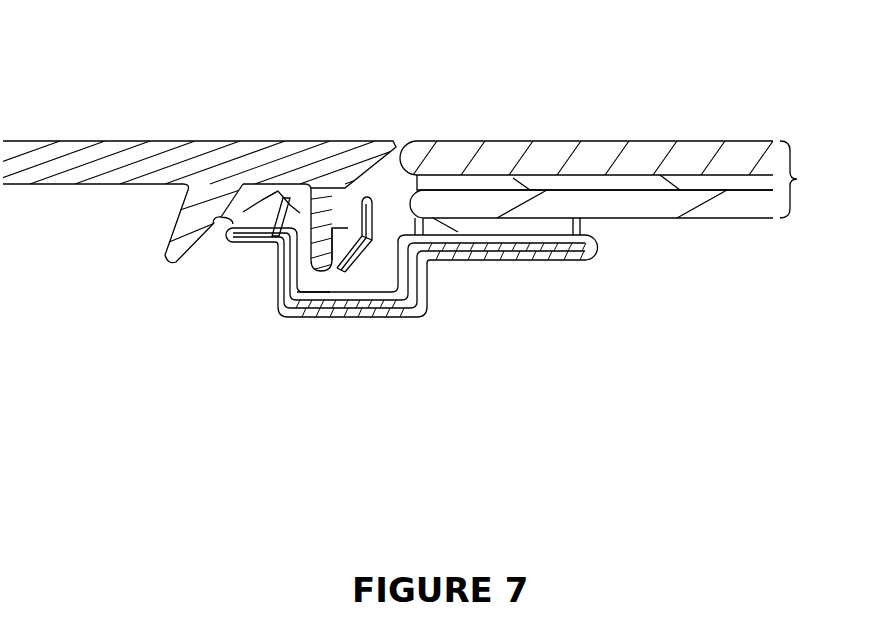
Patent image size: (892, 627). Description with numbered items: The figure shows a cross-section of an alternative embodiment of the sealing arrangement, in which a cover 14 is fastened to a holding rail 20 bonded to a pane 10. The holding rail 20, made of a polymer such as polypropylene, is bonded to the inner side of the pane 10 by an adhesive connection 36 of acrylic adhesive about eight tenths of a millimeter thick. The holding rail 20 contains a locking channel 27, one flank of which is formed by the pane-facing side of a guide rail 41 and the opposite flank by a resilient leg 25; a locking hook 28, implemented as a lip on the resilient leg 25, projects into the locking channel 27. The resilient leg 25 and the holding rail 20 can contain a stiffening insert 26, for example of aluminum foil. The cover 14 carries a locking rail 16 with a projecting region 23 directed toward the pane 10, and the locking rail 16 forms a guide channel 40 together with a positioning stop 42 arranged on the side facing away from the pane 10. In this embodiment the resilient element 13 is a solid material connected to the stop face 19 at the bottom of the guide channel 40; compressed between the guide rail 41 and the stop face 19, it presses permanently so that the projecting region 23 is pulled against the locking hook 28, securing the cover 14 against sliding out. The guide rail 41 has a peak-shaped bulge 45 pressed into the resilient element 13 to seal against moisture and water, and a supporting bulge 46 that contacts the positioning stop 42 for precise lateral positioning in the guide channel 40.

The pane 10 is at (600, 179).
The resilient element 13 is at (279, 192).
The cover 14 is at (83, 158).
The locking rail 16 is at (332, 240).
The stop face 19 is at (268, 181).
The holding rail 20 is at (473, 260).
The projecting region 23 is at (346, 235).
The resilient leg 25 is at (348, 255).
The stiffening insert 26 is at (562, 252).
The locking channel 27 is at (310, 287).
The locking hook 28 is at (340, 238).
The adhesive connection 36 is at (508, 223).
The guide channel 40 is at (243, 199).
The guide rail 41 is at (240, 224).
The positioning stop 42 is at (195, 222).
The peak-shaped bulge 45 is at (277, 212).
The supporting bulge 46 is at (209, 229).